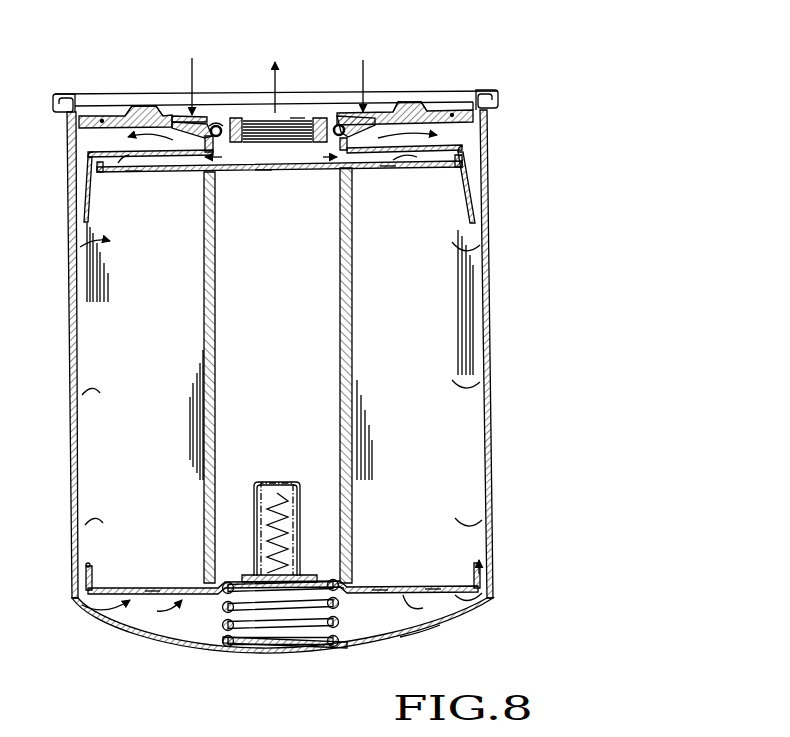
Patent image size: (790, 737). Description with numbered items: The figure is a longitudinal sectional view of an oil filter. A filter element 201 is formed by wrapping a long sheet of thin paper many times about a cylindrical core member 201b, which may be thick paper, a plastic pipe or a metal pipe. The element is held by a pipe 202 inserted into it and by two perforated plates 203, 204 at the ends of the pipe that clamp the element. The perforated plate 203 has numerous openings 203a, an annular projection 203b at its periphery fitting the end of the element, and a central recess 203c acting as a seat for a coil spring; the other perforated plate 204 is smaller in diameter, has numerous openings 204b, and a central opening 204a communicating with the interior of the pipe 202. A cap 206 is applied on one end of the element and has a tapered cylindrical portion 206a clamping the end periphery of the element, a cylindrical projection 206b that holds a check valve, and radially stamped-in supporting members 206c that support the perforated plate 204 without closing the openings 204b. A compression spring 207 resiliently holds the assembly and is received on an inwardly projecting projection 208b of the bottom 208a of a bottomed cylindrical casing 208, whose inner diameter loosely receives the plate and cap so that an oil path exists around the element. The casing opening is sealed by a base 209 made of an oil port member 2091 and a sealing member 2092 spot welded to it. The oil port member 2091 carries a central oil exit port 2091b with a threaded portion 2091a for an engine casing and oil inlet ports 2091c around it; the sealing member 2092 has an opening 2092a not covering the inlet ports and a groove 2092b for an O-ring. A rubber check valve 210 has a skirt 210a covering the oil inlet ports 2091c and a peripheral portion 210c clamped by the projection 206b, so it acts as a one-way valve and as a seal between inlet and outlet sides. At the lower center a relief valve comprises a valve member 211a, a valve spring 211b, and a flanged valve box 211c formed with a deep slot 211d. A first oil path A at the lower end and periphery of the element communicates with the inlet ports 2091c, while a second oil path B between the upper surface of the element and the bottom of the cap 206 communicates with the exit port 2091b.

The filter element 201 is at (422, 400).
The cylindrical core member 201b is at (352, 318).
The pipe 202 is at (216, 348).
The perforated plate 203 is at (493, 585).
The openings 203a is at (152, 595).
The annular projection 203b is at (88, 578).
The recess 203c is at (342, 585).
The perforated plate 204 is at (465, 162).
The opening 204a is at (263, 172).
The openings 204b is at (133, 173).
The cap 206 is at (100, 150).
The tapered cylindrical portion 206a is at (83, 208).
The cylindrical projection 206b is at (338, 148).
The supporting members 206c is at (88, 162).
The compression spring 207 is at (227, 628).
The casing 208 is at (75, 608).
The bottom 208a is at (418, 638).
The projection 208b is at (288, 645).
The base 209 is at (442, 106).
The oil port member 2091 is at (236, 118).
The threaded portion 2091a is at (298, 118).
The oil exit port 2091b is at (280, 145).
The oil inlet ports 2091c is at (186, 118).
The sealing member 2092 is at (105, 116).
The opening 2092a is at (337, 107).
The groove 2092b is at (150, 108).
The check valve 210 is at (183, 118).
The skirt 210a is at (196, 140).
The peripheral portion 210c is at (210, 128).
The valve member 211a is at (262, 573).
The valve spring 211b is at (268, 505).
The valve box 211c is at (288, 482).
The deep slot 211d is at (300, 515).
The first oil path A is at (200, 628).
The second oil path B is at (438, 160).